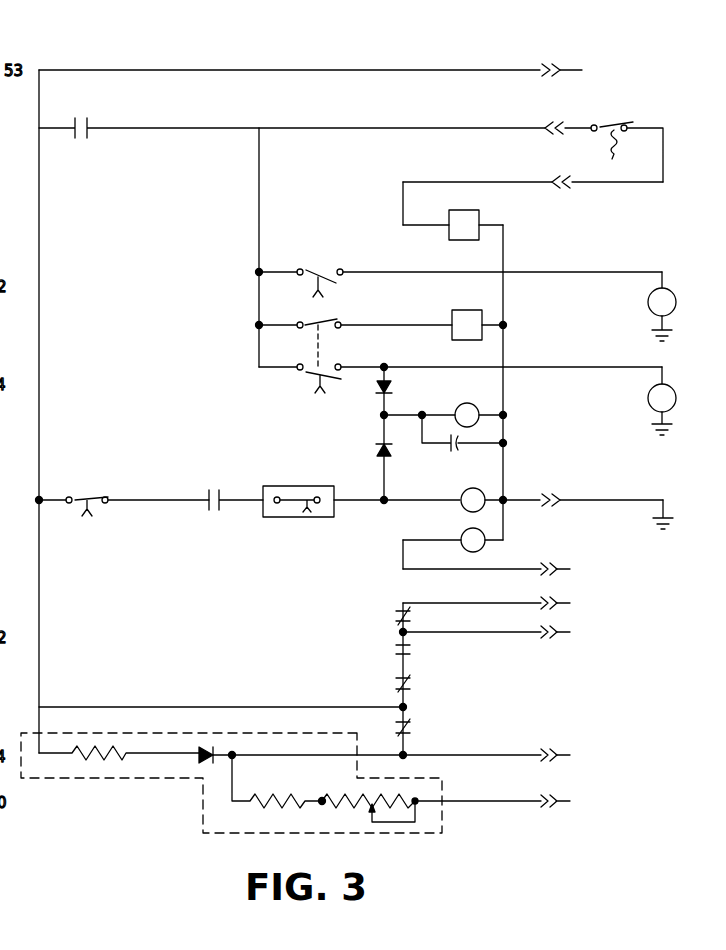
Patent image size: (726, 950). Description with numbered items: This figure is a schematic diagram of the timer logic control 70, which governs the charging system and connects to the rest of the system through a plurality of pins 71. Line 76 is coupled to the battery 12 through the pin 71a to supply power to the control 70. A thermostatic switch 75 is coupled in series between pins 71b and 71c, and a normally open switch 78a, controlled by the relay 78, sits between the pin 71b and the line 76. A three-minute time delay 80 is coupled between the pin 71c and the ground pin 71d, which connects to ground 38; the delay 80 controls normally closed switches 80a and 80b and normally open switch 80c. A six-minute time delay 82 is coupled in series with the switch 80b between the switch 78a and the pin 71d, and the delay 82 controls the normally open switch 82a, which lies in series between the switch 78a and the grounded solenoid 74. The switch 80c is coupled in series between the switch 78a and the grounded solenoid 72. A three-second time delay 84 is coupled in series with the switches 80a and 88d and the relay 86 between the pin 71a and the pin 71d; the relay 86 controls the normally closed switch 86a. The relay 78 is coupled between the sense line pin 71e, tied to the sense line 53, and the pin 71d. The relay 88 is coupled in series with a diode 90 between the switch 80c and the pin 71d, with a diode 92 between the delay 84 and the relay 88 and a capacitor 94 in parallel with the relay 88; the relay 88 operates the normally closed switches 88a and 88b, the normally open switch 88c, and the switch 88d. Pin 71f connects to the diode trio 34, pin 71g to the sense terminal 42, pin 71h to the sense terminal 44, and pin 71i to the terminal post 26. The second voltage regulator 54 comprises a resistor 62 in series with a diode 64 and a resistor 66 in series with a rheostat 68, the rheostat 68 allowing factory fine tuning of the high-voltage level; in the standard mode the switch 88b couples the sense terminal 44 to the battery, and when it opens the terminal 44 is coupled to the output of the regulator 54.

The line 76 is at (303, 63).
The power pin 71a is at (560, 66).
The battery 12 is at (629, 71).
The normally open switch 78a is at (90, 124).
The pin 71b is at (560, 122).
The thermostatic switch 75 is at (620, 116).
The pin 71c is at (563, 176).
The three-minute time delay 80 is at (470, 214).
The normally open switch 82a is at (320, 268).
The solenoid 74 is at (668, 298).
The normally closed switch 80b is at (330, 320).
The six-minute time delay 82 is at (474, 316).
The normally open switch 80c is at (312, 380).
The solenoid 72 is at (668, 394).
The diode 90 is at (391, 389).
The relay 88 is at (478, 408).
The capacitor 94 is at (447, 450).
The diode 92 is at (374, 454).
The normally closed switch 80a is at (89, 496).
The normally open switch 88d is at (210, 492).
The three-second time delay 84 is at (295, 521).
The relay 86 is at (464, 490).
The ground pin 71d is at (560, 496).
The ground 38 is at (672, 527).
The relay 78 is at (485, 546).
The sense line pin 71e is at (556, 572).
The sense line 53 is at (625, 570).
The pin 71f is at (540, 598).
The diode trio 34 is at (626, 603).
The normally closed switch 88a is at (393, 614).
The pin 71g is at (548, 640).
The sense terminal 42 is at (629, 633).
The normally open switch 88c is at (393, 650).
The normally closed switch 86a is at (412, 686).
The normally closed switch 88b is at (412, 730).
The pin 71h is at (552, 745).
The sense terminal 44 is at (629, 755).
The resistor 62 is at (97, 750).
The diode 64 is at (209, 747).
The second voltage regulator 54 is at (203, 833).
The timer logic control 70 is at (117, 804).
The resistor 66 is at (270, 797).
The rheostat 68 is at (358, 803).
The pin 71i is at (560, 806).
The terminal post 26 is at (624, 801).
The pins 71 is at (548, 812).